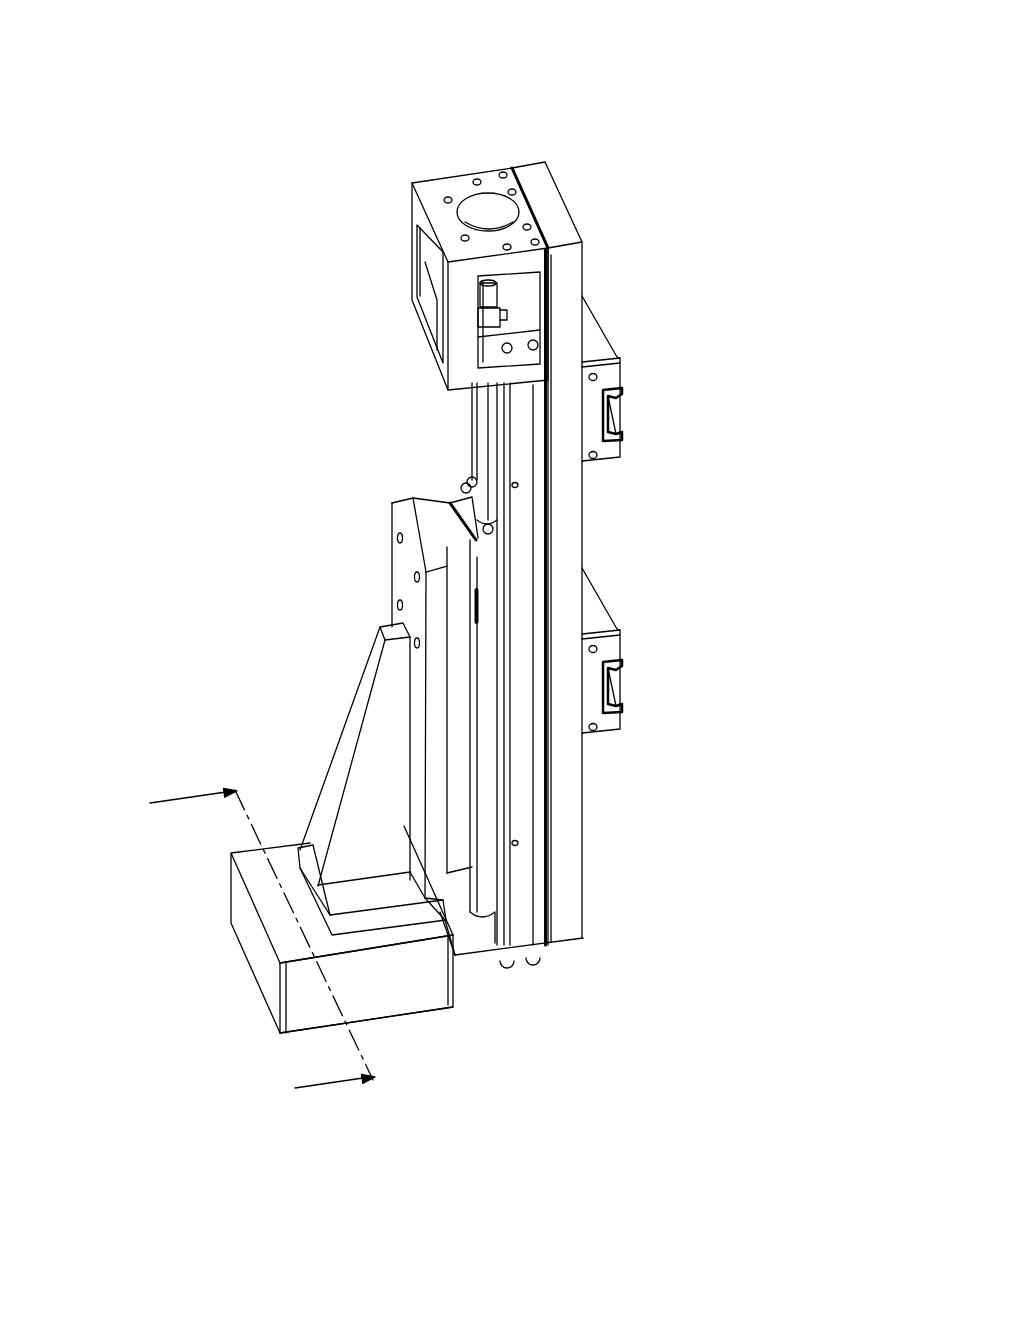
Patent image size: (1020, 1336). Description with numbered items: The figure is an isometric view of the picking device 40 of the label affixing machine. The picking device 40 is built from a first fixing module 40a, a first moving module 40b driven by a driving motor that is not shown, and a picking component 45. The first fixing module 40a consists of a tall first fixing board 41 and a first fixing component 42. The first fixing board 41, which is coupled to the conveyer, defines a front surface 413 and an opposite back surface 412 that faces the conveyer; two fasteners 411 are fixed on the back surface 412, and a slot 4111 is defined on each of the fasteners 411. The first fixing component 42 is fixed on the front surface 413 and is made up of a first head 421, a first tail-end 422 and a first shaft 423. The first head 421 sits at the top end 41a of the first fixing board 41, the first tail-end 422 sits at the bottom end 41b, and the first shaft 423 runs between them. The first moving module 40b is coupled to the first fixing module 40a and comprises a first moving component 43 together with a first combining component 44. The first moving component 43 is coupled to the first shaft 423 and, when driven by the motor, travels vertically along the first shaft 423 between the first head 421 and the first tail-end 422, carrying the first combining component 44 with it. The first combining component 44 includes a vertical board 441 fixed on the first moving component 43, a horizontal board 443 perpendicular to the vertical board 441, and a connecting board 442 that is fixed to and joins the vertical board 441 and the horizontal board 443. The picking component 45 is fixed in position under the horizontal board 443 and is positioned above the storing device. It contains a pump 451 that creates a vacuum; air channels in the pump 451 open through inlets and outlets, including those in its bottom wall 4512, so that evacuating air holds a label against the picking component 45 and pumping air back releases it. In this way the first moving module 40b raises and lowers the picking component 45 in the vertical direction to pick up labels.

The picking device 40 is at (375, 38).
The first fixing module 40a is at (187, 135).
The first moving module 40b is at (163, 480).
The first fixing board 41 is at (535, 180).
The top end 41a is at (558, 199).
The bottom end 41b is at (571, 946).
The fastener 411 is at (592, 332).
The slot 4111 is at (612, 404).
The back surface 412 is at (586, 246).
The front surface 413 is at (545, 288).
The first fixing component 42 is at (272, 242).
The first head 421 is at (463, 290).
The first tail-end 422 is at (453, 907).
The first shaft 423 is at (487, 413).
The first moving component 43 is at (427, 518).
The first combining component 44 is at (240, 557).
The vertical board 441 is at (413, 598).
The connecting board 442 is at (387, 688).
The horizontal board 443 is at (385, 893).
The picking component 45 is at (252, 865).
The pump 451 is at (252, 935).
The bottom wall 4512 is at (360, 1027).